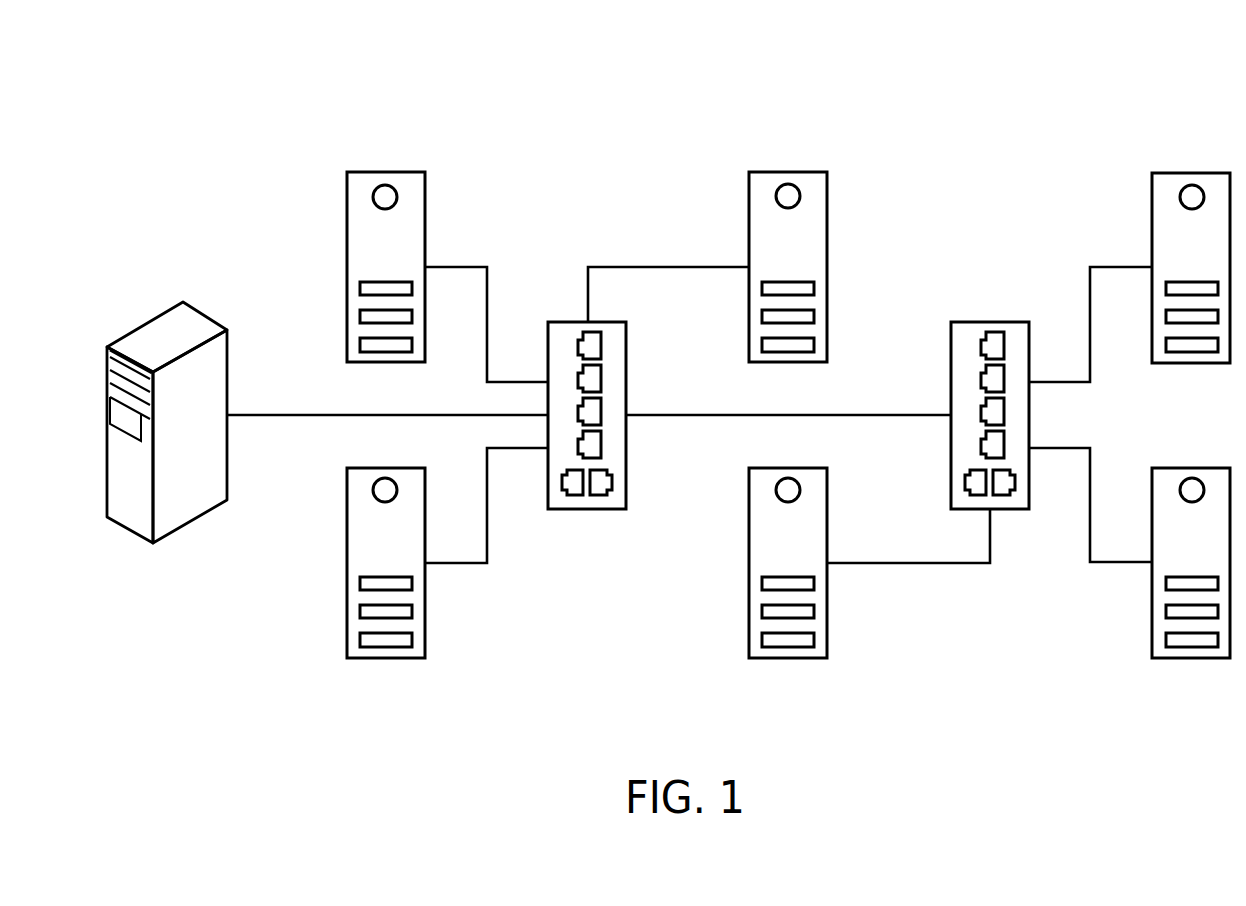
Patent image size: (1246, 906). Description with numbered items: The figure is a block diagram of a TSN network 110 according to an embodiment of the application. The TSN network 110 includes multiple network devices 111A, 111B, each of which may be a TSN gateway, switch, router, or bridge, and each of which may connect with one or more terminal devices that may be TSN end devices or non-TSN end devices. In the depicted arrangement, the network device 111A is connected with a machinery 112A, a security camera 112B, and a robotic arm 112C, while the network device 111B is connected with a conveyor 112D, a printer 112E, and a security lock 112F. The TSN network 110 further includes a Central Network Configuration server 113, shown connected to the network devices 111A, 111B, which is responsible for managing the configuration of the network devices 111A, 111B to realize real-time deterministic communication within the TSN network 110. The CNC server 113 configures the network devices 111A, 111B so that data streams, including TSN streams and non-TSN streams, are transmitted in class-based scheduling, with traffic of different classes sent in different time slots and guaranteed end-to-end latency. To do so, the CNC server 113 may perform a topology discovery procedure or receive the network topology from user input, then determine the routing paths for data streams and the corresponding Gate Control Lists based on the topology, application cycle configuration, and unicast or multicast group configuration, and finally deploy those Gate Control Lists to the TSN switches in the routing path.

The TSN network 110 is at (1032, 82).
The network device 111A is at (588, 510).
The network device 111B is at (990, 322).
The machinery 112A is at (384, 170).
The security camera 112B is at (387, 659).
The robotic arm 112C is at (786, 170).
The conveyor 112D is at (789, 659).
The printer 112E is at (1190, 171).
The security lock 112F is at (1192, 659).
The Central Network Configuration (CNC) server 113 is at (160, 332).